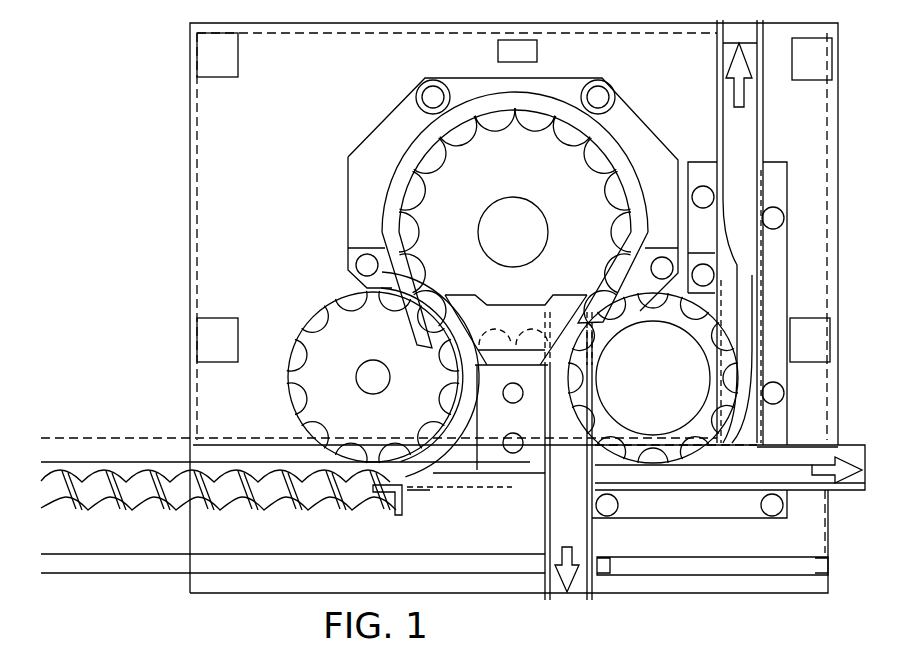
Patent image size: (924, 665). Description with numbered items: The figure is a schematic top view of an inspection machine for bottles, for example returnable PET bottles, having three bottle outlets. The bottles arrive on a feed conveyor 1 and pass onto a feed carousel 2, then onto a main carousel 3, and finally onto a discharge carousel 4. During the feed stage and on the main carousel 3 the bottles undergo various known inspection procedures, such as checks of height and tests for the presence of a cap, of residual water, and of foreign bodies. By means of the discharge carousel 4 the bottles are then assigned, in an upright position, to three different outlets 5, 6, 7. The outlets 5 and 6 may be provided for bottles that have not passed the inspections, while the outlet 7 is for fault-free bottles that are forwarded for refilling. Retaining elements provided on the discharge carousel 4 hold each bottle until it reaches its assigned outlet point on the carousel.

The feed conveyor 1 is at (157, 462).
The feed carousel 2 is at (315, 325).
The main carousel 3 is at (435, 212).
The discharge carousel 4 is at (684, 410).
The outlet 5 is at (562, 528).
The outlet 6 is at (808, 472).
The outlet 7 is at (747, 132).